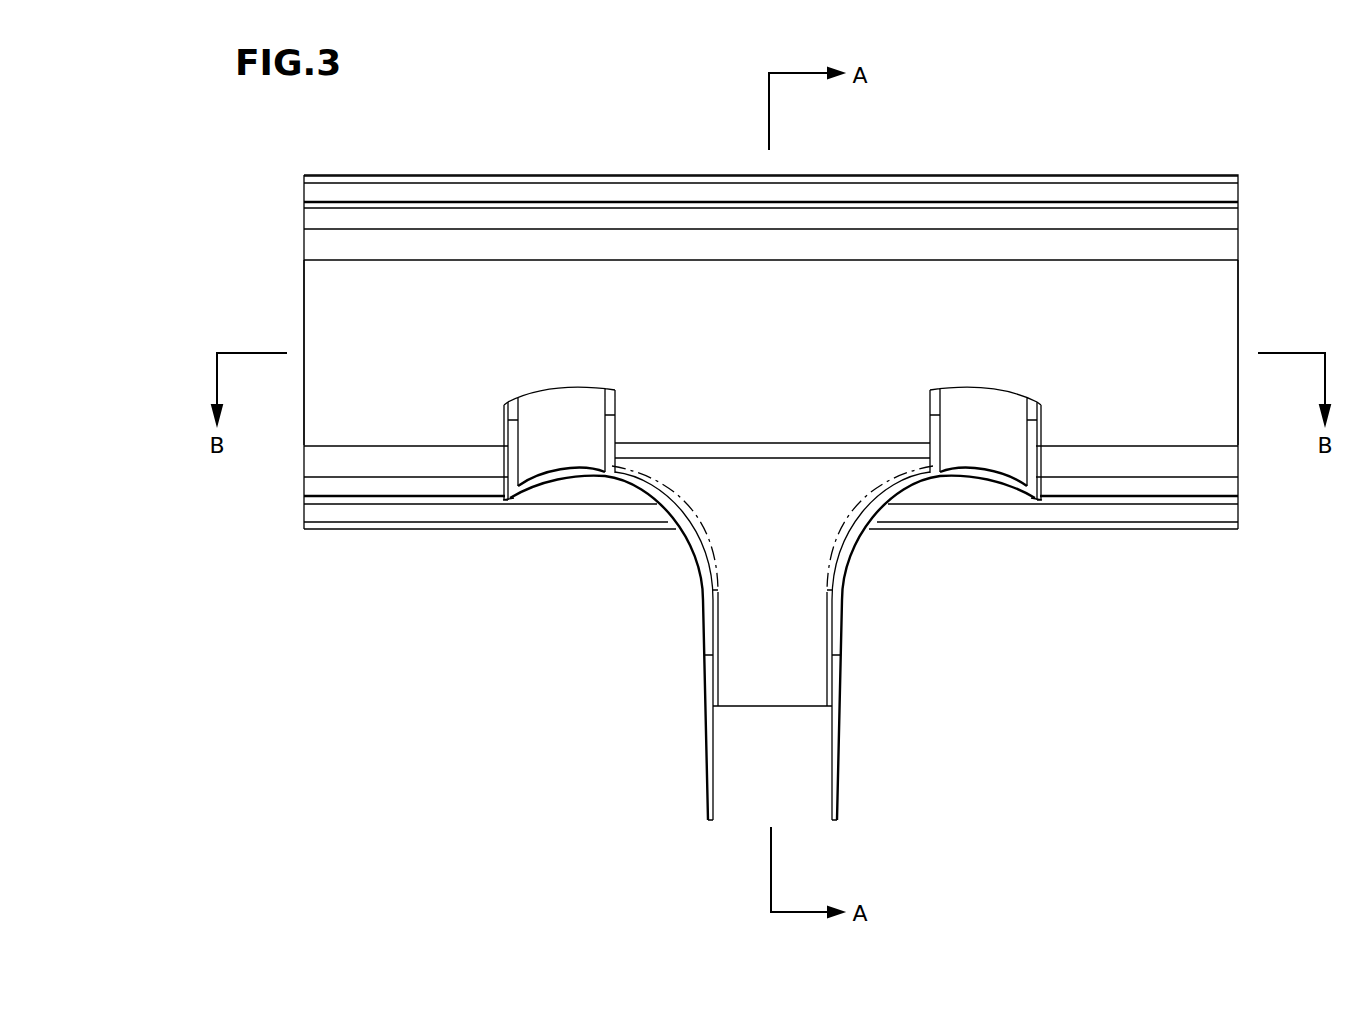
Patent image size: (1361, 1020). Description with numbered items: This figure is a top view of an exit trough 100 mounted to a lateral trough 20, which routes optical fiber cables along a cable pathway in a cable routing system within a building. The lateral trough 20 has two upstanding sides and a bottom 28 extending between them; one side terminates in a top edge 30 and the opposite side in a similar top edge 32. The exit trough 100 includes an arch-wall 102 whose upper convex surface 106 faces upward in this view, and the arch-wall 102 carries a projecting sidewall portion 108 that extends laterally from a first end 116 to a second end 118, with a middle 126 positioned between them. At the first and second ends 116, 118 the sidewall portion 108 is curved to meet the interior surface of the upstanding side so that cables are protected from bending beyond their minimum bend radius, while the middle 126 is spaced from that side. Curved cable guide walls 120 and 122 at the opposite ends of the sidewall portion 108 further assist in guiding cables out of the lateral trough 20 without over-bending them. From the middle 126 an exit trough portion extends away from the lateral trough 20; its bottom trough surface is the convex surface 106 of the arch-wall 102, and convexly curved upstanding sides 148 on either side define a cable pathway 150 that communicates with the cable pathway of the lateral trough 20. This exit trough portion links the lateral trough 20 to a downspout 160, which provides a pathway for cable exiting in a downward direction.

The lateral trough 20 is at (1006, 136).
The bottom 28 is at (756, 339).
The top edge 30 is at (375, 505).
The top edge 32 is at (443, 200).
The exit trough 100 is at (873, 679).
The arch-wall 102 is at (750, 562).
The upper convex surface 106 is at (735, 632).
The sidewall portion 108 is at (753, 458).
The first end 116 is at (1040, 472).
The second end 118 is at (505, 472).
The curved cable guide wall 120 is at (991, 436).
The curved cable guide wall 122 is at (582, 436).
The middle 126 is at (838, 458).
The upstanding sides 148 is at (703, 608).
The cable pathway 150 is at (750, 682).
The downspout 160 is at (713, 762).